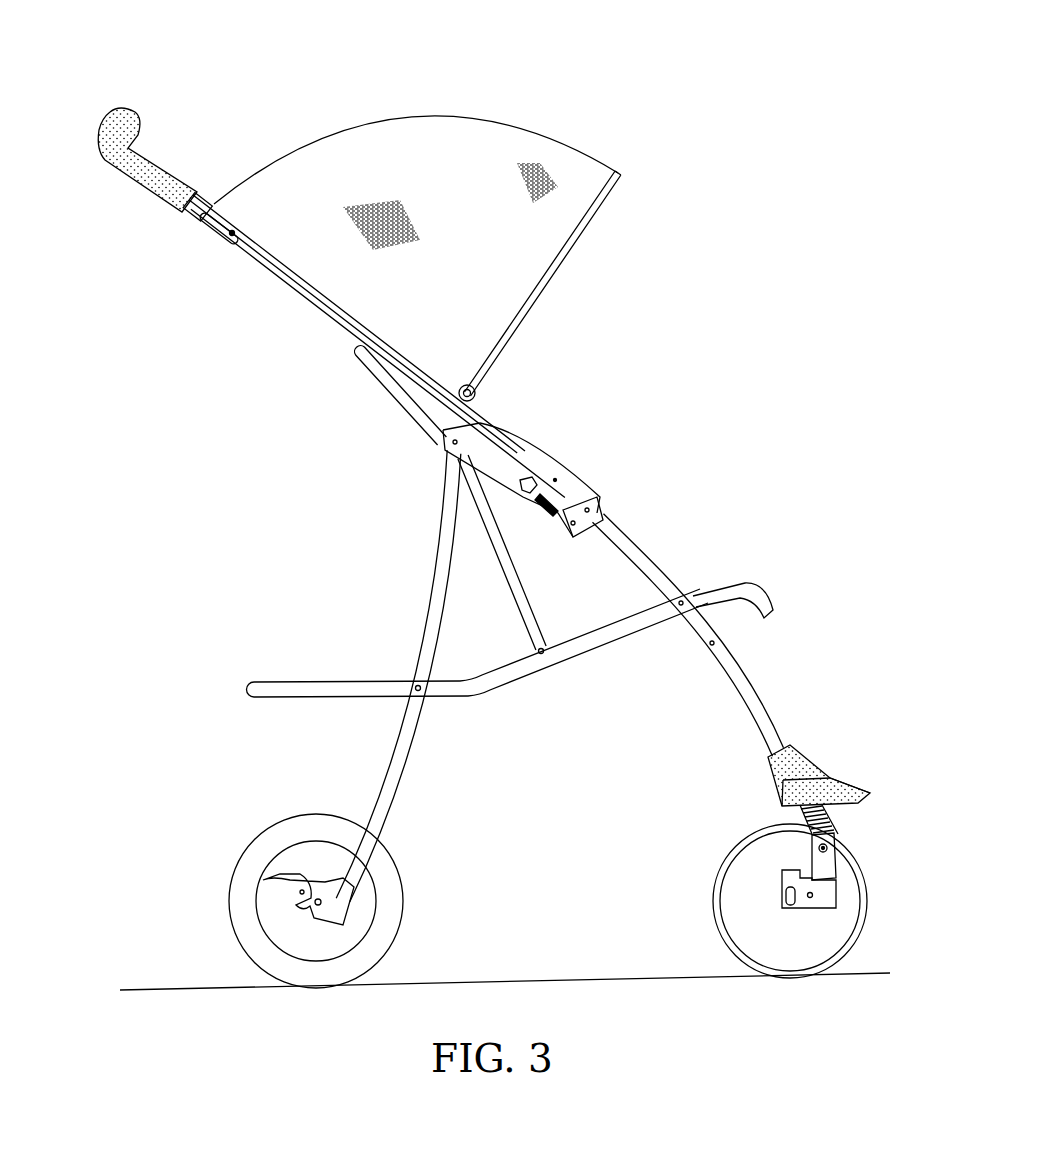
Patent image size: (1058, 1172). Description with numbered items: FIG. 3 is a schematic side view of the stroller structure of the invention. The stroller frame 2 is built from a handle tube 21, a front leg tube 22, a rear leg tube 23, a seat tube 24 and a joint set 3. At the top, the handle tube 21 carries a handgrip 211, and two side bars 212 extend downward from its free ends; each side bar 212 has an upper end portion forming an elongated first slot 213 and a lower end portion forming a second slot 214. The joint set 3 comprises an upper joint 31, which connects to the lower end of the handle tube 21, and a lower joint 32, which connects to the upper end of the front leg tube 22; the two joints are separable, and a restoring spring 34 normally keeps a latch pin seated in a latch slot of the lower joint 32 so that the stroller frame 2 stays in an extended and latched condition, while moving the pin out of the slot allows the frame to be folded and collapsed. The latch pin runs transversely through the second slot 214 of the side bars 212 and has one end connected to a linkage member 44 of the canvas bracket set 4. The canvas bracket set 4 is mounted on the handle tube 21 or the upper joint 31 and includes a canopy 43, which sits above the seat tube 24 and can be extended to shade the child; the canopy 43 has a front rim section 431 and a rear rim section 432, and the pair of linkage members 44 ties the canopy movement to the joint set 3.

The stroller frame 2 is at (573, 290).
The handle tube 21 is at (208, 298).
The handgrip 211 is at (123, 110).
The side bars 212 is at (286, 278).
The first slot 213 is at (203, 234).
The second slot 214 is at (527, 470).
The front leg tube 22 is at (747, 693).
The rear leg tube 23 is at (380, 790).
The seat tube 24 is at (742, 578).
The joint set 3 is at (650, 402).
The upper joint 31 is at (483, 418).
The lower joint 32 is at (580, 483).
The restoring spring 34 is at (597, 512).
The canvas bracket set 4 is at (512, 105).
The canopy 43 is at (368, 152).
The front rim section 431 is at (618, 180).
The rear rim section 432 is at (210, 200).
The linkage members 44 is at (380, 345).